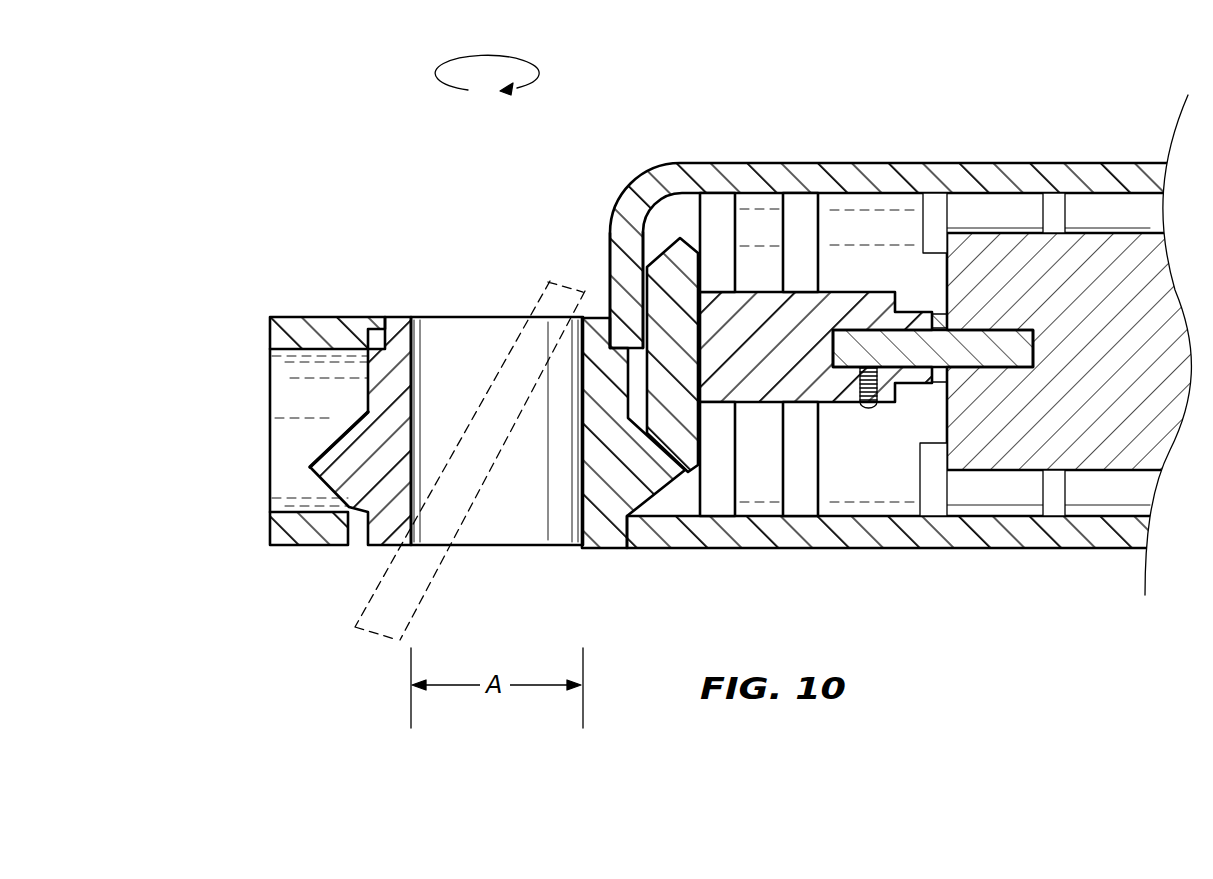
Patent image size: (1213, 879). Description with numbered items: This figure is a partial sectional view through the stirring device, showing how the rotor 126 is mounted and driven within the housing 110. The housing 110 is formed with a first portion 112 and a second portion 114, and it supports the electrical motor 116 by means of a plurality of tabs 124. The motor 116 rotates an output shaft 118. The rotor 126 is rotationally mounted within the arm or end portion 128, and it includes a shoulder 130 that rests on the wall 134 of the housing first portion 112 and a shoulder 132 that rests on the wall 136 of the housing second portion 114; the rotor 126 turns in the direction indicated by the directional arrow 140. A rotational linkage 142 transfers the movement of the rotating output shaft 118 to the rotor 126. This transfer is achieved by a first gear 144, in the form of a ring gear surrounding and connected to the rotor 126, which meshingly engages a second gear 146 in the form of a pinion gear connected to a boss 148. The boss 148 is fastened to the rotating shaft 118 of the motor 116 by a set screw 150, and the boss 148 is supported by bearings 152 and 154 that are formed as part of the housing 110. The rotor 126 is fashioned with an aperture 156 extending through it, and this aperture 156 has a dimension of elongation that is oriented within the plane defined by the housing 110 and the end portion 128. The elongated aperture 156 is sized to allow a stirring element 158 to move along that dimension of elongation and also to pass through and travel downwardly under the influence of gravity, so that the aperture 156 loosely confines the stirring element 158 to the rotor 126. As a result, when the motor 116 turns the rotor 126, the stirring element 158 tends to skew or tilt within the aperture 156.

The housing 110 is at (802, 163).
The first portion 112 is at (652, 543).
The second portion 114 is at (650, 215).
The electrical motor 116 is at (1123, 450).
The output shaft 118 is at (993, 340).
The tabs 124 is at (1058, 142).
The rotor 126 is at (390, 325).
The end portion 128 is at (300, 327).
The shoulder 130 is at (345, 546).
The shoulder 132 is at (383, 343).
The wall 134 is at (630, 540).
The wall 136 is at (630, 208).
The directional arrow 140 is at (485, 55).
The rotational linkage 142 is at (586, 552).
The first gear 144 is at (312, 472).
The second gear 146 is at (680, 258).
The boss 148 is at (822, 312).
The set screw 150 is at (864, 408).
The bearing 152 is at (717, 500).
The bearing 154 is at (800, 503).
The aperture 156 is at (460, 335).
The stirring element 158 is at (380, 630).